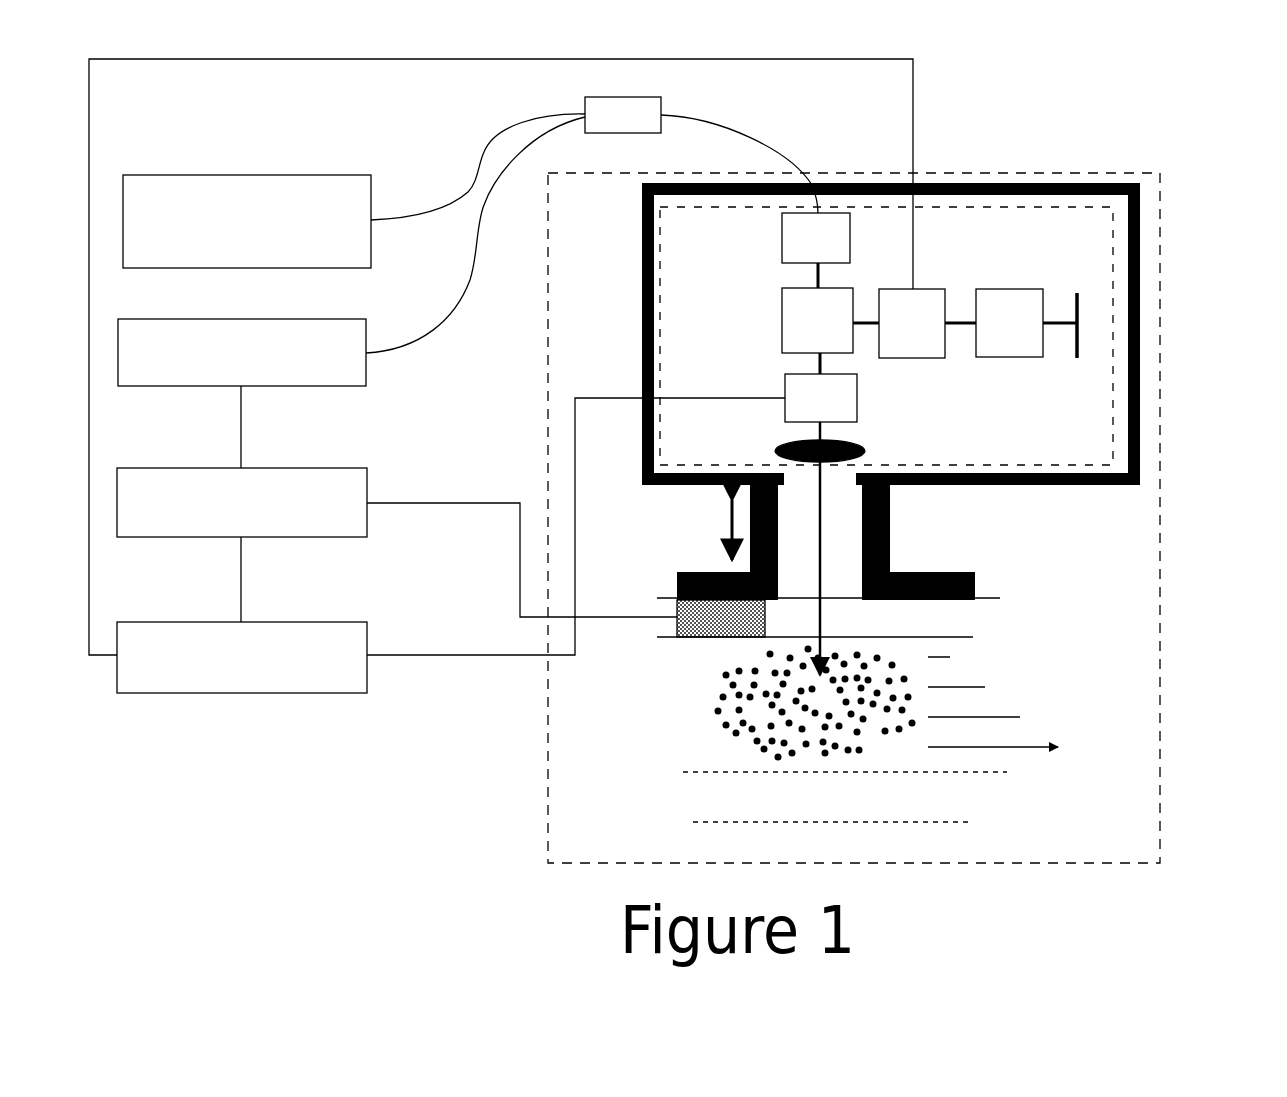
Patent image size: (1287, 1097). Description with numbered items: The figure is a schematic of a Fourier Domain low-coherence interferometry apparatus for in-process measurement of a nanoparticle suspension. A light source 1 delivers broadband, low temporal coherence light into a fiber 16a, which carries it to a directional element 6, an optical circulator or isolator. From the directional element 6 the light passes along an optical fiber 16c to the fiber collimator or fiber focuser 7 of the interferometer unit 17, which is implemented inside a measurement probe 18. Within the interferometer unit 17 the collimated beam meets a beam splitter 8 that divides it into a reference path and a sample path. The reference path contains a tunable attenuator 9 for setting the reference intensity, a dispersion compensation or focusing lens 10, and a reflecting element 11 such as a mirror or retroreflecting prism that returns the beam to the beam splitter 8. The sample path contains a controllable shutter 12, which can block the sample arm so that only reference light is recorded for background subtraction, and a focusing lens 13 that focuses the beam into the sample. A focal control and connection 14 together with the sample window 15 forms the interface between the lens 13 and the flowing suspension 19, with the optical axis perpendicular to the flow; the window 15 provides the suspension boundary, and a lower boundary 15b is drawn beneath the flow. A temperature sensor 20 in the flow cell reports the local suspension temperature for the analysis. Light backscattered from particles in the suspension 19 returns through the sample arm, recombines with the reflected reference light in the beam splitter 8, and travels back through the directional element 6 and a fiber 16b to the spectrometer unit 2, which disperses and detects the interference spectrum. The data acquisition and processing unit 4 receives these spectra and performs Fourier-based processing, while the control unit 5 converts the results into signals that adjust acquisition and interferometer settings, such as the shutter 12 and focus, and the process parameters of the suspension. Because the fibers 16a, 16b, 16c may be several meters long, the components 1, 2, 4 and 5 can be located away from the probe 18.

The light source 1 is at (247, 221).
The spectrometer unit 2 is at (242, 352).
The data acquisition and processing unit 4 is at (397, 504).
The control unit 5 is at (451, 545).
The directional element 6 is at (623, 115).
The fiber collimator or fiber focuser 7 is at (816, 250).
The beam splitter 8 is at (830, 331).
The attenuator 9 is at (927, 323).
The dispersion compensation or focusing lens 10 is at (1026, 323).
The reflecting element 11 is at (1091, 305).
The controllable shutter 12 is at (821, 524).
The focusing lens 13 is at (843, 454).
The focal control and connection 14 is at (893, 538).
The sample window 15 is at (828, 617).
The sample carrier 15b is at (845, 797).
The fiber 16a is at (478, 167).
The fiber 16b is at (475, 235).
The optical fiber 16c is at (739, 147).
The interferometer unit 17 is at (1113, 437).
The measurement probe 18 is at (1176, 630).
The suspension 19 is at (715, 733).
The temperature sensor 20 is at (721, 618).